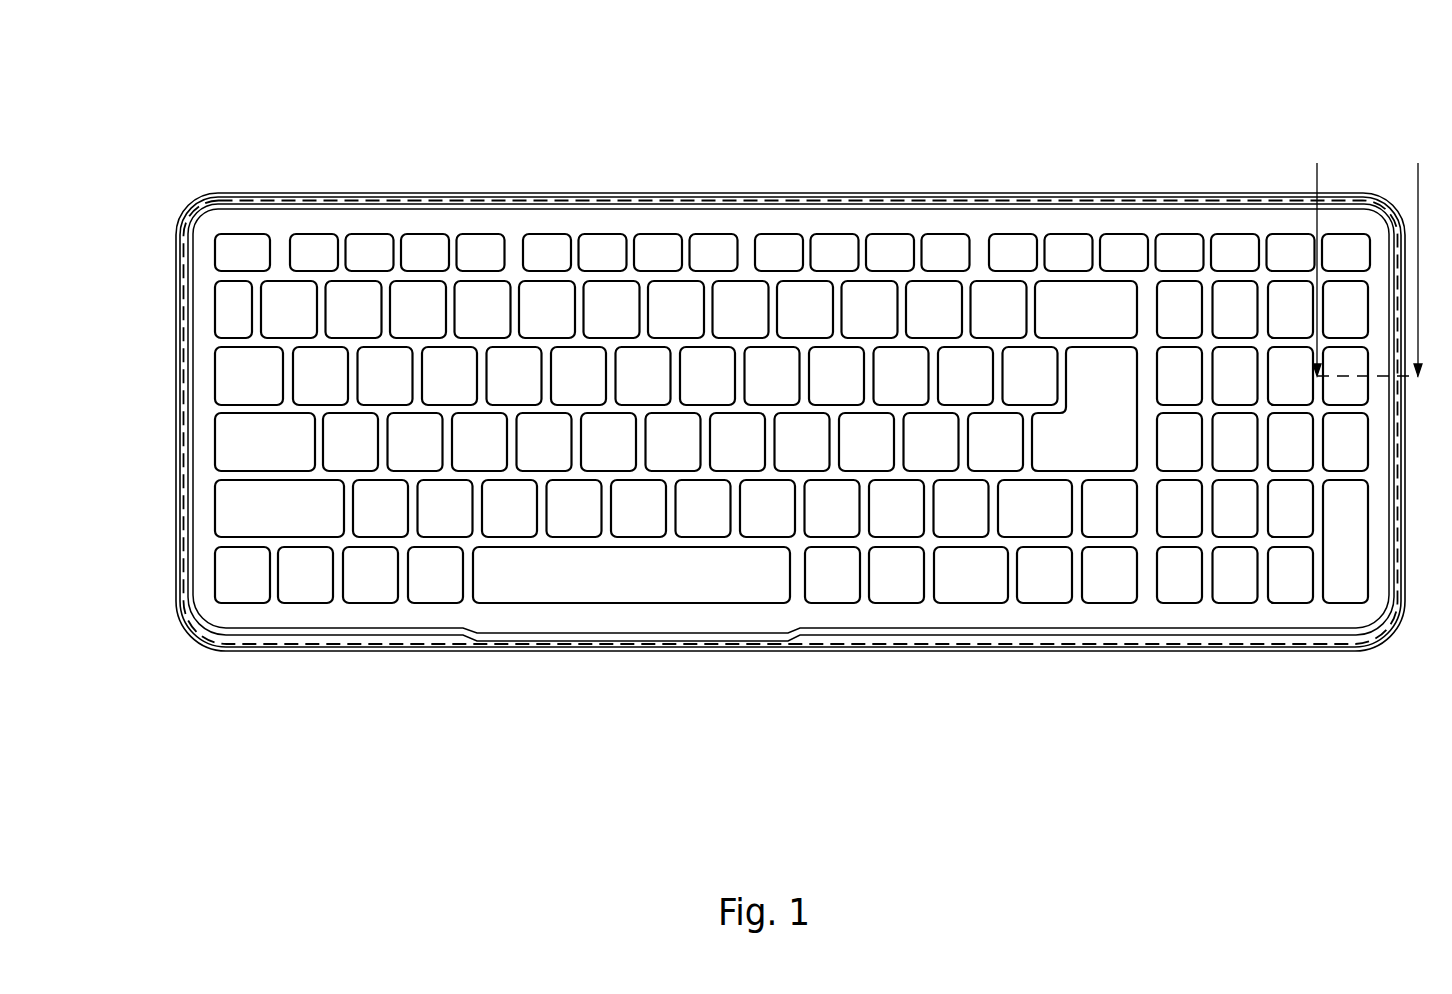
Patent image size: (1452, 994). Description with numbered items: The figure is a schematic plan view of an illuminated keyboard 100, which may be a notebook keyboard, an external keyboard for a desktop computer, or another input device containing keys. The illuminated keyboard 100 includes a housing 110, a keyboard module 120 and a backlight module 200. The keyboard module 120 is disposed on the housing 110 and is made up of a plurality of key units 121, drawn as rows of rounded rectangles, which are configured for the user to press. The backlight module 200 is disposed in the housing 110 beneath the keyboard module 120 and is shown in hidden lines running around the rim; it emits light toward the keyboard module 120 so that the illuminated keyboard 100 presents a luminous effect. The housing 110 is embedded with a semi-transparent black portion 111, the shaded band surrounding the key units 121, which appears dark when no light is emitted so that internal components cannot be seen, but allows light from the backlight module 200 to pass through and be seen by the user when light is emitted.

The illuminated keyboard 100 is at (142, 42).
The housing 110 is at (263, 645).
The semi-transparent black portion 111 is at (1120, 196).
The keyboard module 120 is at (761, 361).
The key units 121 is at (243, 248).
The backlight module 200 is at (510, 200).